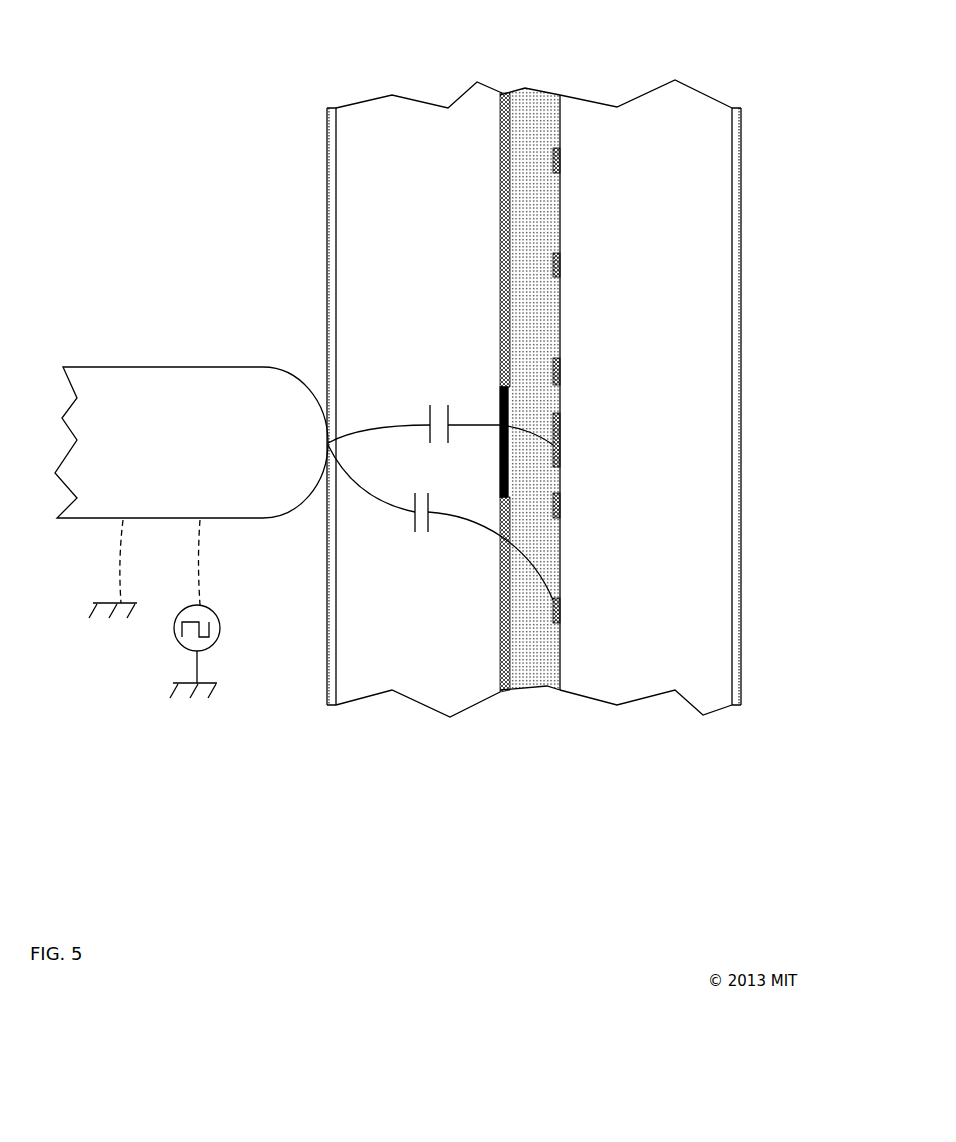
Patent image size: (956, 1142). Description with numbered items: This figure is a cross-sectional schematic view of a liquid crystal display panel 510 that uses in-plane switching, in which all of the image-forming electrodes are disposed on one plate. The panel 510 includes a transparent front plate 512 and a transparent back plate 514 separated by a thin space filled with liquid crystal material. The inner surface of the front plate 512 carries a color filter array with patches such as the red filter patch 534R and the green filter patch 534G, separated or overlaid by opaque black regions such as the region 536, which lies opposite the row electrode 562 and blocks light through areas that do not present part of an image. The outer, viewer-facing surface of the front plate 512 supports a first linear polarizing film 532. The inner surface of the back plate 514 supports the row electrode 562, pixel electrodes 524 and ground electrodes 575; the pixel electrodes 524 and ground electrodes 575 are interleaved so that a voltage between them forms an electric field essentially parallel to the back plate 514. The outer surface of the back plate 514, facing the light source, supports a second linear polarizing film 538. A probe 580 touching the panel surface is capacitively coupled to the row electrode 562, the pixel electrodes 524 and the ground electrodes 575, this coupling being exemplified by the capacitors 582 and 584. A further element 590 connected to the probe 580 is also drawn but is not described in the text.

The liquid crystal display panel 510 is at (733, 55).
The transparent front plate 512 is at (437, 709).
The transparent back plate 514 is at (650, 697).
The pixel electrodes 524 is at (560, 160).
The first linear polarizing film 532 is at (328, 147).
The green filter patch 534G is at (500, 227).
The red filter patch 534R is at (498, 637).
The opaque black region 536 is at (498, 400).
The second linear polarizing film 538 is at (740, 213).
The row electrode 562 is at (560, 440).
The ground electrodes 575 is at (560, 265).
The probe 580 is at (147, 366).
The capacitor 582 is at (430, 410).
The capacitor 584 is at (415, 521).
The signal source 590 is at (173, 625).